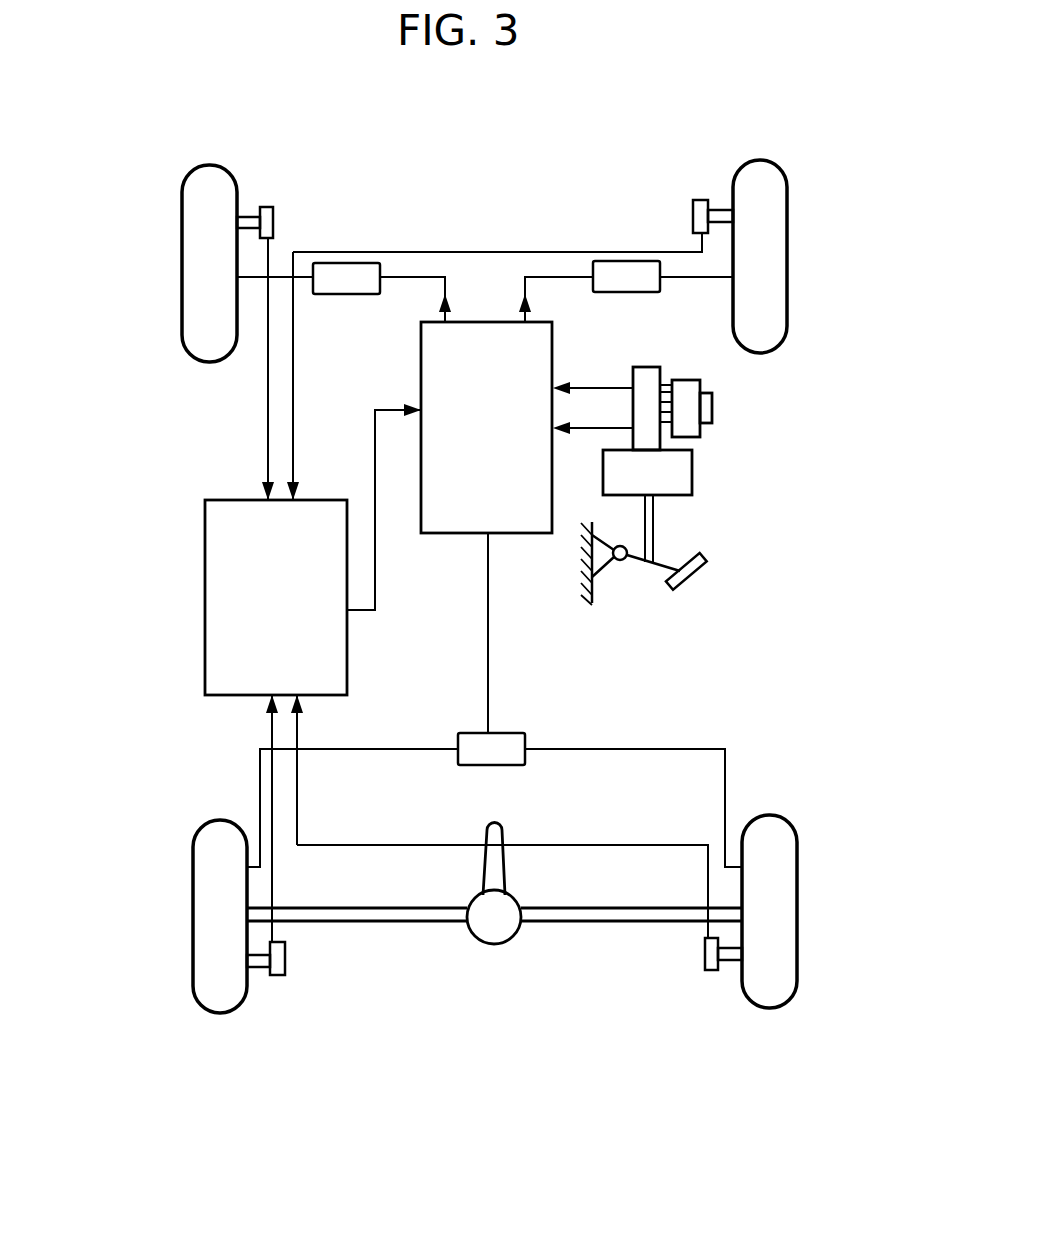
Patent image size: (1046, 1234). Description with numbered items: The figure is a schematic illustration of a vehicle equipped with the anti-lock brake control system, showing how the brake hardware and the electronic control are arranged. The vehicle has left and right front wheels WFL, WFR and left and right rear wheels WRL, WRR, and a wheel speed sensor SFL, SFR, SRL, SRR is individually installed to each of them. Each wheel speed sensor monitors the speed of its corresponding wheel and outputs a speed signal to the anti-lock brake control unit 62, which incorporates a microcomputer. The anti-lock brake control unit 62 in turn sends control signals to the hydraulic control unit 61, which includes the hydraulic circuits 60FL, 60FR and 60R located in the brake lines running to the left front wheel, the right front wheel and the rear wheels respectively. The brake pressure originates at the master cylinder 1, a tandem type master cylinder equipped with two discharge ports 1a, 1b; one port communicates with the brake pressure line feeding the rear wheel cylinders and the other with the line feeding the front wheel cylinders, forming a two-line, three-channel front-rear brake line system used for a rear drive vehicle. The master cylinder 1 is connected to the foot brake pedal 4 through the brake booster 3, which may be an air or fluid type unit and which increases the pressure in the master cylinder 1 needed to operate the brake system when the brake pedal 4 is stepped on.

The left front wheel WFL is at (182, 218).
The right front wheel WFR is at (787, 220).
The left rear wheel WRL is at (193, 870).
The right rear wheel WRR is at (797, 887).
The wheel speed sensor SFL is at (273, 217).
The wheel speed sensor SFR is at (693, 203).
The wheel speed sensor SRL is at (285, 966).
The wheel speed sensor SRR is at (703, 952).
The hydraulic circuit 60FL is at (362, 294).
The hydraulic circuit 60FR is at (643, 292).
The hydraulic circuit 60R is at (513, 733).
The hydraulic control unit 61 is at (455, 535).
The anti-lock brake control unit 62 is at (205, 518).
The master cylinder 1 is at (776, 402).
The discharge port 1a is at (603, 386).
The discharge port 1b is at (598, 431).
The brake booster 3 is at (692, 475).
The foot brake pedal 4 is at (688, 578).